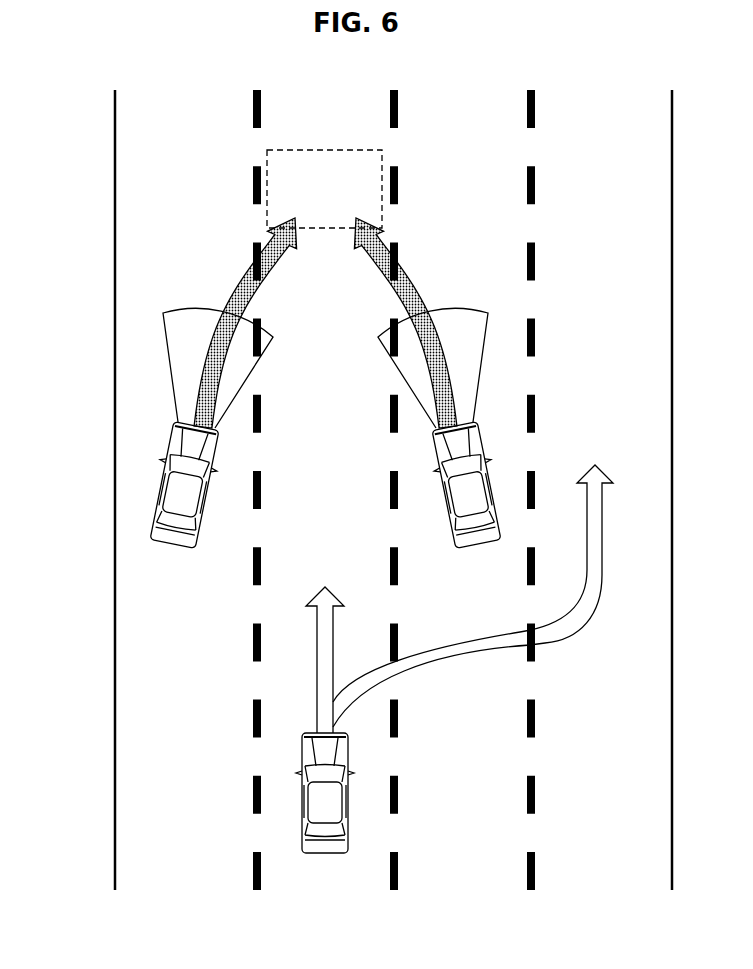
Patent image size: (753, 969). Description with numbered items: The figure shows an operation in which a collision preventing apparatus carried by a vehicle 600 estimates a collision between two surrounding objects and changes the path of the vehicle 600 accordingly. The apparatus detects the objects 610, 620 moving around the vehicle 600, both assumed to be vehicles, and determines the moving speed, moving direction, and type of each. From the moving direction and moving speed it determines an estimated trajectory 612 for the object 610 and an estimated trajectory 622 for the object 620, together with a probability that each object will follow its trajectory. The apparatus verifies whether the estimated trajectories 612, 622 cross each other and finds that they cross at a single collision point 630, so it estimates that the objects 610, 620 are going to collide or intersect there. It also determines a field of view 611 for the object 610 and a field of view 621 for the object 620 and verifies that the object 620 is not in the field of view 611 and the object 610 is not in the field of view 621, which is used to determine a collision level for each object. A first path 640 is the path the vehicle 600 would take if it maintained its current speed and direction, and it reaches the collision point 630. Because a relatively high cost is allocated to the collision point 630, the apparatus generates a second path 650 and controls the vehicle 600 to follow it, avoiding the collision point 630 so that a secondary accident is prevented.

The vehicle 600 is at (322, 855).
The object 610 is at (165, 470).
The field of view 611 is at (170, 347).
The estimated trajectory 612 is at (248, 282).
The object 620 is at (488, 468).
The field of view 621 is at (483, 343).
The estimated trajectory 622 is at (403, 282).
The collision point 630 is at (310, 147).
The first path 640 is at (317, 682).
The second path 650 is at (580, 627).